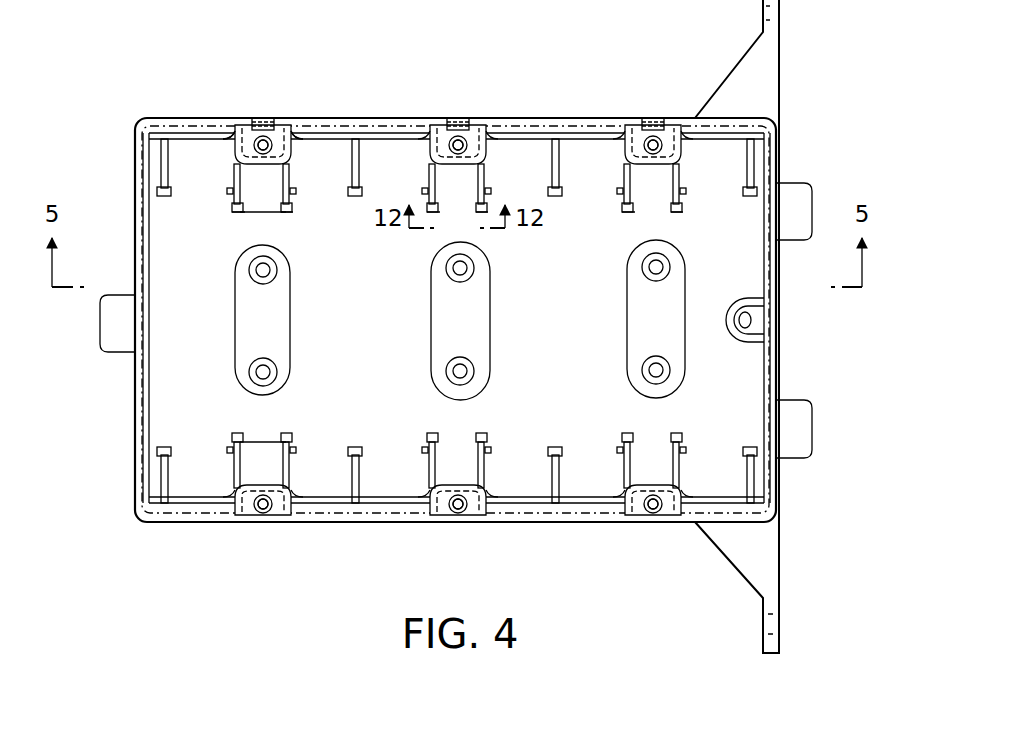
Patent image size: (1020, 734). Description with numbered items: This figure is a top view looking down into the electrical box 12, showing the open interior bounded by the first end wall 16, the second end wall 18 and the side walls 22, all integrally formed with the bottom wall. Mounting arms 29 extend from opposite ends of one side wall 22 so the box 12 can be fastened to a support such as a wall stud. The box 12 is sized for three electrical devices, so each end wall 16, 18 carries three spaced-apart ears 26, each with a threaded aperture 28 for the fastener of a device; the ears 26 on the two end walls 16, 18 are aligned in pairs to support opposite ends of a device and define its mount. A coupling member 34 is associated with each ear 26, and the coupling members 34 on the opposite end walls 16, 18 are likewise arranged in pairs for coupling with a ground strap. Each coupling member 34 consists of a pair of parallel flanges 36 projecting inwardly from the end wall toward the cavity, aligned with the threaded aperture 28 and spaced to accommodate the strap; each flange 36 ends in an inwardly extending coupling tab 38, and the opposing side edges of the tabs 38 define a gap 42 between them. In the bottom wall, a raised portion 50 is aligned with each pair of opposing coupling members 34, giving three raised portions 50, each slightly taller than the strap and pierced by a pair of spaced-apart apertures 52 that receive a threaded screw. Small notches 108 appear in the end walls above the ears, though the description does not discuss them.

The electrical box 12 is at (824, 127).
The first end wall 16 is at (586, 150).
The second end wall 18 is at (584, 492).
The side walls 22 is at (135, 405).
The ears 26 is at (273, 128).
The threaded aperture 28 is at (251, 128).
The mounting arms 29 is at (782, 50).
The coupling member 34 is at (292, 214).
The flanges 36 is at (219, 130).
The coupling tab 38 is at (246, 208).
The gap 42 is at (260, 208).
The raised portion 50 is at (291, 330).
The apertures 52 is at (456, 272).
The notch 108 is at (263, 118).